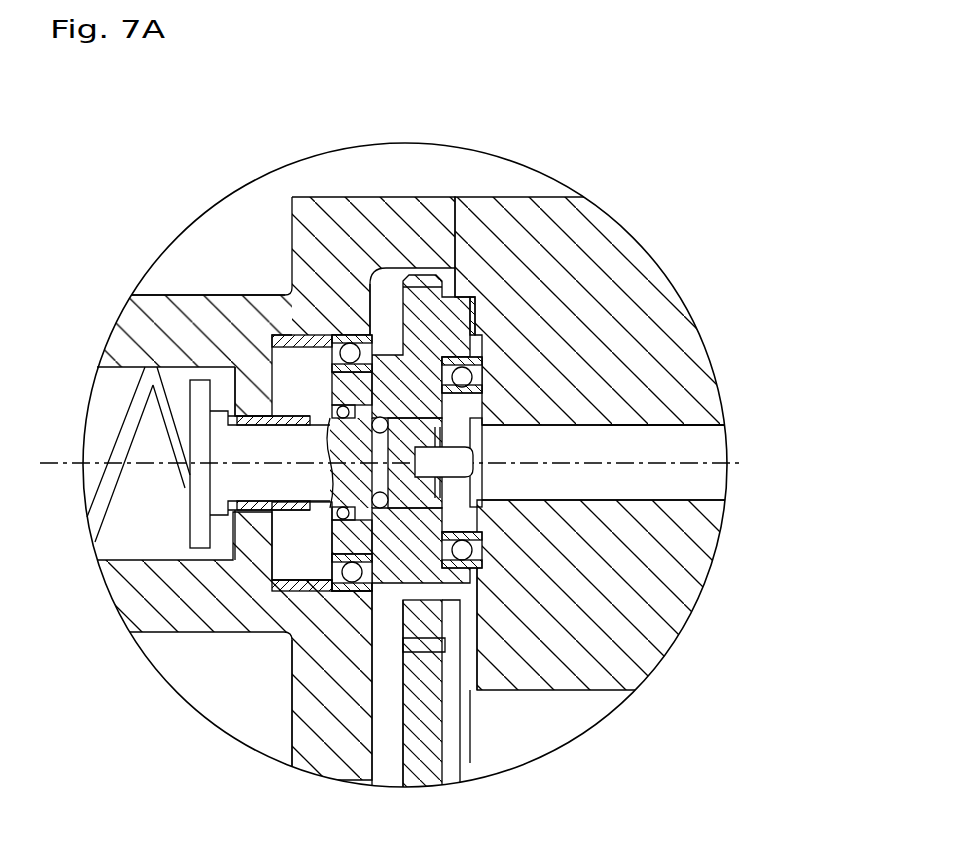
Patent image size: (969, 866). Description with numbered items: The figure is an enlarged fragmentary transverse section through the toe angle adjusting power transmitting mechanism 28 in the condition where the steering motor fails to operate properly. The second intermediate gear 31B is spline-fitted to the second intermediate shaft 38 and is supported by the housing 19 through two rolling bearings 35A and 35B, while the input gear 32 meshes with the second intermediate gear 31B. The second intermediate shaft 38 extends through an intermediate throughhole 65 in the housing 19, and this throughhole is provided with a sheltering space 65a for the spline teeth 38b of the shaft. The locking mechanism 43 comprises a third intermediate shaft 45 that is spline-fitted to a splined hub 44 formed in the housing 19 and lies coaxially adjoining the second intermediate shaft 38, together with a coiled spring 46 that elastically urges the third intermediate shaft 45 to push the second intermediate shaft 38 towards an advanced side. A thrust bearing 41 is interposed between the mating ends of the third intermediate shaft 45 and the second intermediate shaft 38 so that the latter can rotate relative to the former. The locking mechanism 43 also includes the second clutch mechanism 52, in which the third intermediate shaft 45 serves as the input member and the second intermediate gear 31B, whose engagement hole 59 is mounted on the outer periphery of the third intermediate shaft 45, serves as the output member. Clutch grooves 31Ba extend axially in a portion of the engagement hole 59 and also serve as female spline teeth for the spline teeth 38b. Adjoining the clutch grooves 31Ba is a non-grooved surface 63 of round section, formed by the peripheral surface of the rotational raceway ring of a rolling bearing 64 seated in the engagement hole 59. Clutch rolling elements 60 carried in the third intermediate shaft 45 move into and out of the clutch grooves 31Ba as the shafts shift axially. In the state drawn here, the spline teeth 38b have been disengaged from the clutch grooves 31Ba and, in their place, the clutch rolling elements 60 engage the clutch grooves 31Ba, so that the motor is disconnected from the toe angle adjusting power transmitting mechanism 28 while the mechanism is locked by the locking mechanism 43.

The housing 19 is at (657, 297).
The toe angle adjusting power transmitting mechanism 28 is at (688, 400).
The second intermediate gear 31B is at (425, 268).
The clutch grooves 31Ba is at (290, 292).
The input gear 32 is at (427, 763).
The rolling bearing 35A is at (490, 362).
The rolling bearing 35B is at (292, 290).
The second intermediate shaft 38 is at (713, 443).
The spline teeth 38b is at (485, 445).
The thrust bearing 41 is at (398, 590).
The locking mechanism 43 is at (183, 295).
The splined hub 44 is at (263, 525).
The third intermediate shaft 45 is at (218, 483).
The coiled spring 46 is at (117, 437).
The second clutch mechanism 52 is at (405, 378).
The engagement hole 59 is at (376, 437).
The clutch rolling elements 60 is at (272, 558).
The non-grooved surface 63 is at (337, 428).
The rolling bearing 64 is at (328, 483).
The intermediate throughhole 65 is at (712, 475).
The sheltering space 65a is at (498, 440).